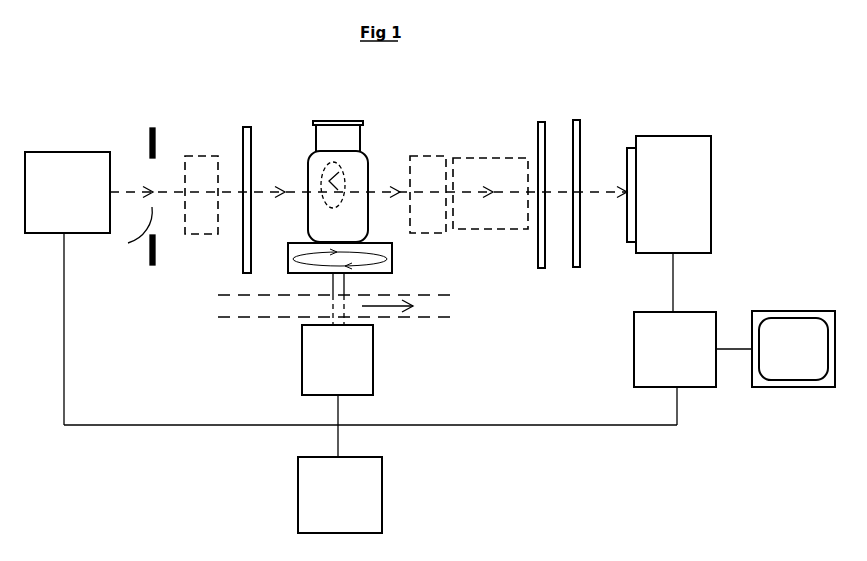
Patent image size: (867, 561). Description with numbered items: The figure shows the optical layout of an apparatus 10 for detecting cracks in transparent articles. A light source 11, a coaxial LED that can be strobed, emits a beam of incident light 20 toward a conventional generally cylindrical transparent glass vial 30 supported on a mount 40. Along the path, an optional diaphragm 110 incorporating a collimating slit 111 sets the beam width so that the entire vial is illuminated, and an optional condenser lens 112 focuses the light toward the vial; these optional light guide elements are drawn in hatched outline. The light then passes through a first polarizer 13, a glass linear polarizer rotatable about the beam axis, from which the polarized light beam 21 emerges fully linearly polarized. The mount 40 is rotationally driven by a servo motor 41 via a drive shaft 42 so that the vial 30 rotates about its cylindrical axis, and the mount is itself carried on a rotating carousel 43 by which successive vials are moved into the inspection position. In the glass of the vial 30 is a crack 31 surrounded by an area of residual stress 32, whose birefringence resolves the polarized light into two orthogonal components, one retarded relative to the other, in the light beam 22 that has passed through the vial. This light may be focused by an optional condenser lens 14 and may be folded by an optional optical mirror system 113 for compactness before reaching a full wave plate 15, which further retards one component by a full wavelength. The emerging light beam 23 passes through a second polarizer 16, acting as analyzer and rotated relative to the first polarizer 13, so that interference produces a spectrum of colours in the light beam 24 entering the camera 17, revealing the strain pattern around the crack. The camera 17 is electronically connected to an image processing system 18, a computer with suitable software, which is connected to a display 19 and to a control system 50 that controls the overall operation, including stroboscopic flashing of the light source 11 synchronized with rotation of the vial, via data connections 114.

The apparatus 10 is at (195, 88).
The light source 11 is at (67, 152).
The diaphragm 110 is at (150, 147).
The collimating slit 111 is at (134, 236).
The condenser lens 112 is at (193, 156).
The first polarizer 13 is at (246, 127).
The beam of incident light 20 is at (136, 190).
The polarized light beam 21 is at (263, 192).
The vial 30 is at (320, 120).
The crack 31 is at (330, 178).
The area of residual stress 32 is at (328, 200).
The mount 40 is at (378, 243).
The condenser lens 14 is at (430, 153).
The light beam 22 is at (407, 188).
The optical mirror system 113 is at (487, 158).
The full wave plate 15 is at (538, 121).
The second polarizer 16 is at (573, 117).
The light beam 23 is at (562, 192).
The light beam 24 is at (600, 192).
The camera 17 is at (667, 136).
The data connections 114 is at (675, 270).
The image processing system 18 is at (633, 349).
The display 19 is at (793, 309).
The servo motor 41 is at (302, 358).
The drive shaft 42 is at (335, 302).
The carousel 43 is at (248, 317).
The control system 50 is at (298, 495).